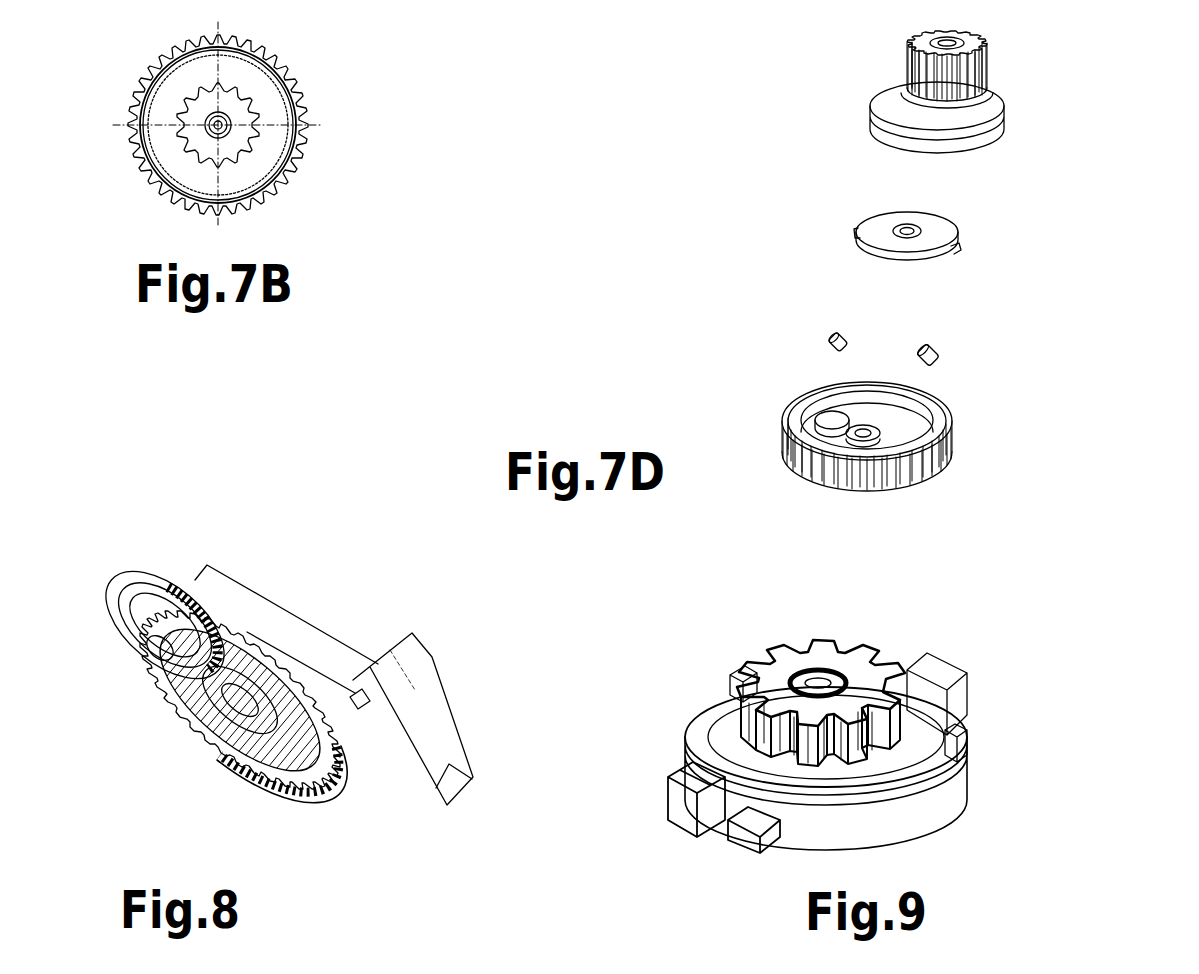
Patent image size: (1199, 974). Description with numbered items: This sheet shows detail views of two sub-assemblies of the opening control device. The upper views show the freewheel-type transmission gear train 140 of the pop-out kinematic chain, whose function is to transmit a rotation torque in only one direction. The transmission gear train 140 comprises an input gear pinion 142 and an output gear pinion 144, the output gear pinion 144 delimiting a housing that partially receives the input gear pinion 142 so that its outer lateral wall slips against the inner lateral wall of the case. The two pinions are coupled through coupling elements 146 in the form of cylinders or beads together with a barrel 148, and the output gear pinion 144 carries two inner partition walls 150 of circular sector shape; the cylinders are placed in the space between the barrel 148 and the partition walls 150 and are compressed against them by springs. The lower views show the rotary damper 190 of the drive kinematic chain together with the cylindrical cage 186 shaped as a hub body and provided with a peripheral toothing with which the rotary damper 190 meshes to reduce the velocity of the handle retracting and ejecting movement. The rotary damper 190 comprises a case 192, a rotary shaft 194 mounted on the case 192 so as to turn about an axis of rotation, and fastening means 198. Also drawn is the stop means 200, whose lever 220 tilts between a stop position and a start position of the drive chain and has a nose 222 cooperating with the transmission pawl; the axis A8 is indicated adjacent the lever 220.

In FIG. 7B, the transmission gear train 140 is at (313, 155).
In FIG. 7D, the transmission gear train 140 is at (808, 283).
In FIG. 7D, the input gear pinion 142 is at (912, 80).
In FIG. 7D, the output gear pinion 144 is at (807, 458).
In FIG. 7D, the coupling elements 146 is at (830, 341).
In FIG. 7D, the barrel 148 is at (873, 240).
In FIG. 7D, the inner partition walls 150 is at (842, 410).
In FIG. 8, the cylindrical cage 186 is at (312, 800).
In FIG. 8, the rotary damper 190 is at (155, 600).
In FIG. 9, the rotary damper 190 is at (761, 726).
In FIG. 9, the case 192 is at (712, 727).
In FIG. 9, the rotary shaft 194 is at (783, 678).
In FIG. 9, the fastening means 198 is at (700, 826).
In FIG. 8, the stop means 200 is at (293, 686).
In FIG. 8, the lever 220 is at (242, 597).
In FIG. 8, the nose 222 is at (457, 783).
In FIG. 8, the pivot axis A8 is at (402, 667).